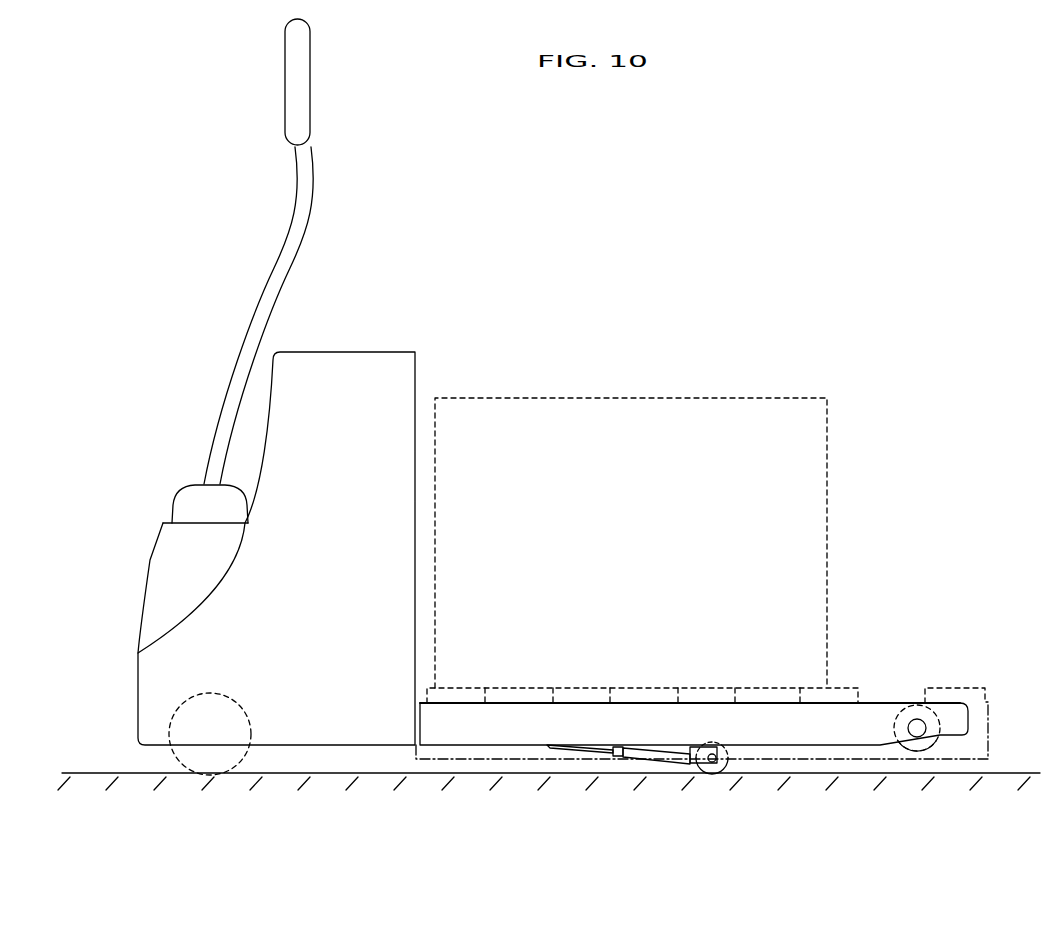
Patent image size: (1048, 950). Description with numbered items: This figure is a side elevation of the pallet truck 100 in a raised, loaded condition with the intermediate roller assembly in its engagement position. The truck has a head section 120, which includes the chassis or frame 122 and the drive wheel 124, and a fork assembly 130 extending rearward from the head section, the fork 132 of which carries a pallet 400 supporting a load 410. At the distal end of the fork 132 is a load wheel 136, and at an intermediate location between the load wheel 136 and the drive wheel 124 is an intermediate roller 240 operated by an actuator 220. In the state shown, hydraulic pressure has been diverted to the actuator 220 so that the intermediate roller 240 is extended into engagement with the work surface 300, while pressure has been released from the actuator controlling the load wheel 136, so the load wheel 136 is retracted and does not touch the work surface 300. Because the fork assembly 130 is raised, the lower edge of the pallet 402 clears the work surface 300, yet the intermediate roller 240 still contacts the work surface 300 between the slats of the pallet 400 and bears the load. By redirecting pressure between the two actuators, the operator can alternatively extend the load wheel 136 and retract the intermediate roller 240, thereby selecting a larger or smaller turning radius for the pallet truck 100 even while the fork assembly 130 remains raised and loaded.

The pallet truck 100 is at (866, 250).
The head section 120 is at (253, 607).
The chassis or frame 122 is at (317, 513).
The drive wheel 124 is at (171, 734).
The fork assembly 130 is at (690, 752).
The fork 132 is at (759, 733).
The load wheel 136 is at (913, 713).
The actuator 220 is at (585, 748).
The intermediate roller 240 is at (707, 778).
The work surface 300 is at (78, 778).
The pallet 400 is at (838, 700).
The lower edge of the pallet 402 is at (983, 760).
The load 410 is at (612, 457).